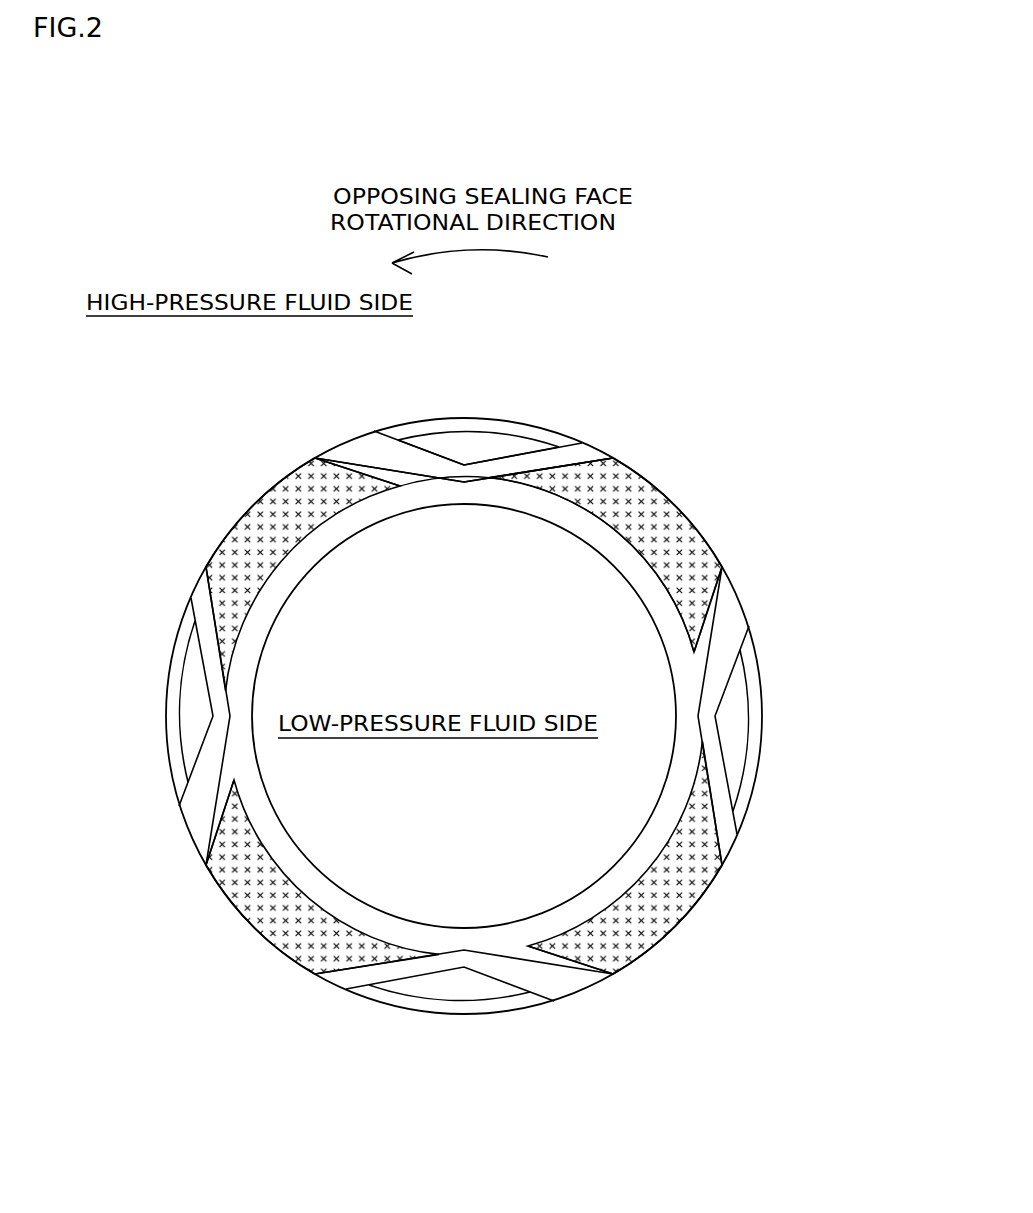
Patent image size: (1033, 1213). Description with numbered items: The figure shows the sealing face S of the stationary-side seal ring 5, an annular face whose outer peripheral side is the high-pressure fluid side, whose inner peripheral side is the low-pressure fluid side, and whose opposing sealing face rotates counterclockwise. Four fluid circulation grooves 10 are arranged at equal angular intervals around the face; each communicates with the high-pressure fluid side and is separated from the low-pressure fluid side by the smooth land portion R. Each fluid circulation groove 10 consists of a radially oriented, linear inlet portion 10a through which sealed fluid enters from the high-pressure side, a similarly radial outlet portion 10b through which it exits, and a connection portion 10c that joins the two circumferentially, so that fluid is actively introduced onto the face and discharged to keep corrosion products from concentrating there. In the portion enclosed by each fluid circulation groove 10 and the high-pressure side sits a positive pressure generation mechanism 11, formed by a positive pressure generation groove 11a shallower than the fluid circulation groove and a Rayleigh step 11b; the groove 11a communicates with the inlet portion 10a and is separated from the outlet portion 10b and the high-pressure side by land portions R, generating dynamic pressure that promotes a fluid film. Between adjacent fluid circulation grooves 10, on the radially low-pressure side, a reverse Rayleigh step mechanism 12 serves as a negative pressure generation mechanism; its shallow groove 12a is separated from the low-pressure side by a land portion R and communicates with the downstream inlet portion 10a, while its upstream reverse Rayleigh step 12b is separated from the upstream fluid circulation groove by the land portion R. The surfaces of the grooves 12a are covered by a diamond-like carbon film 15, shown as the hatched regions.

The stationary-side seal ring 5 is at (676, 508).
The sealing face S is at (268, 490).
The land portion R is at (350, 452).
The fluid circulation groove 10 is at (586, 445).
The inlet portion 10a is at (526, 472).
The outlet portion 10b is at (336, 463).
The connection portion 10c is at (456, 470).
The positive pressure generation mechanism 11 is at (473, 430).
The positive pressure generation groove 11a is at (494, 447).
The Rayleigh step 11b is at (446, 440).
The reverse Rayleigh step mechanism 12 is at (682, 533).
The groove 12a is at (650, 578).
The reverse Rayleigh step 12b is at (722, 584).
The diamond-like carbon film 15 is at (655, 480).